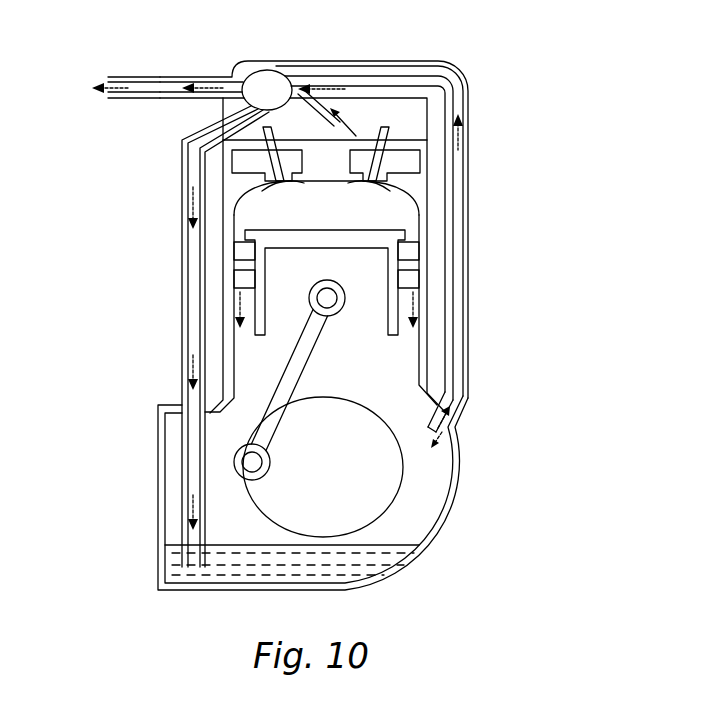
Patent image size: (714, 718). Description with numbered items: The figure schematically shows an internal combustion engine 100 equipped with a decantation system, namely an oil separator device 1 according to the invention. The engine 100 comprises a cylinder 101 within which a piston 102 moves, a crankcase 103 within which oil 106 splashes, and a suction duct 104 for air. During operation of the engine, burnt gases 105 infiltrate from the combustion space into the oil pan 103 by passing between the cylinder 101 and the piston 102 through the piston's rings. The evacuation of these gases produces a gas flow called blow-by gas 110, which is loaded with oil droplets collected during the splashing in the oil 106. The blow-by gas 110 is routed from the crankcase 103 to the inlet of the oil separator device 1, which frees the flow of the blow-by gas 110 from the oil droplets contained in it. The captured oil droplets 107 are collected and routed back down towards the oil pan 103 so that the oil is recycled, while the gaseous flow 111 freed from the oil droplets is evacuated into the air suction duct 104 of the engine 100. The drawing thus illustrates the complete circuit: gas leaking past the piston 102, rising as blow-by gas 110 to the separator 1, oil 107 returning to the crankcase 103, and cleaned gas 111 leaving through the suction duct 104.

The oil separator device 1 is at (272, 86).
The internal combustion engine 100 is at (518, 108).
The cylinder 101 is at (230, 264).
The piston 102 is at (419, 246).
The crankcase 103 is at (460, 480).
The suction duct 104 is at (112, 76).
The burnt gases 105 is at (235, 310).
The oil 106 is at (375, 553).
The captured oil droplets 107 is at (185, 206).
The blow-by gas 110 is at (445, 438).
The gaseous flow 111 is at (197, 76).